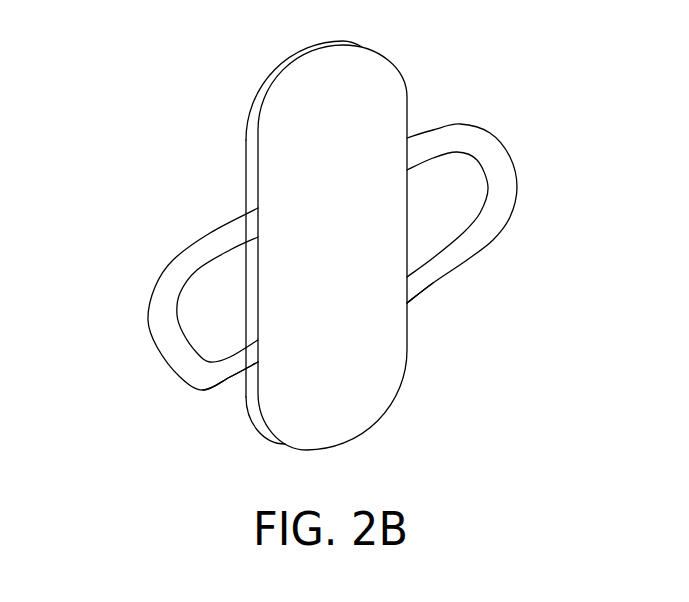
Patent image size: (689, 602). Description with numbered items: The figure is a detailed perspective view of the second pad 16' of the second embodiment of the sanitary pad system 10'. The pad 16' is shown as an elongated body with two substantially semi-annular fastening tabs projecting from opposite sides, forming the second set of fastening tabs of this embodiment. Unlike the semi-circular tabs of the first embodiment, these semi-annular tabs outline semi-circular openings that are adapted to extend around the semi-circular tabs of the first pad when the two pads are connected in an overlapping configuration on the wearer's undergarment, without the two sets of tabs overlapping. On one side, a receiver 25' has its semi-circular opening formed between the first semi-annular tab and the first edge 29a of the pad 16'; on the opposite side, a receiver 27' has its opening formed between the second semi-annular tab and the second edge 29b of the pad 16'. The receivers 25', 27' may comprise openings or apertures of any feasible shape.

The sanitary pad system 10' is at (428, 230).
The second pad 16' is at (281, 247).
The receiver 25' is at (165, 315).
The receiver 27' is at (495, 208).
The first edge 29a is at (225, 383).
The second edge 29b is at (407, 358).